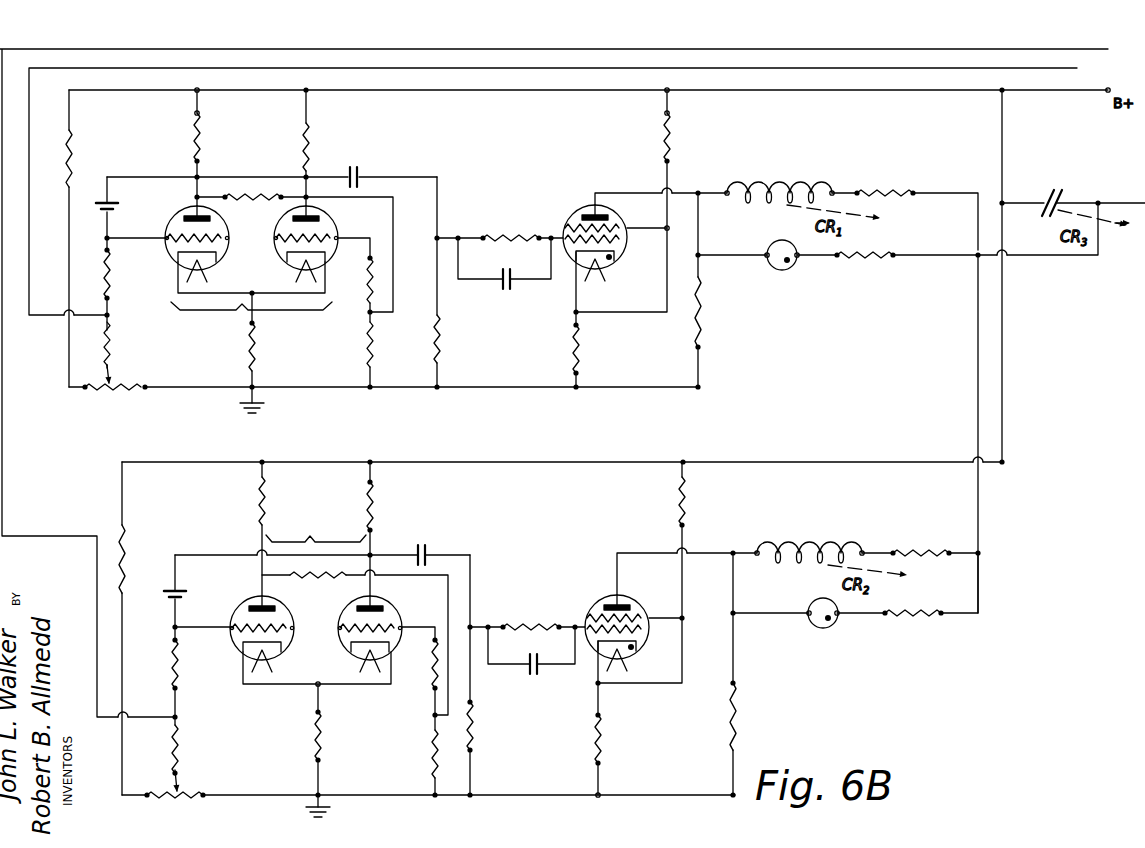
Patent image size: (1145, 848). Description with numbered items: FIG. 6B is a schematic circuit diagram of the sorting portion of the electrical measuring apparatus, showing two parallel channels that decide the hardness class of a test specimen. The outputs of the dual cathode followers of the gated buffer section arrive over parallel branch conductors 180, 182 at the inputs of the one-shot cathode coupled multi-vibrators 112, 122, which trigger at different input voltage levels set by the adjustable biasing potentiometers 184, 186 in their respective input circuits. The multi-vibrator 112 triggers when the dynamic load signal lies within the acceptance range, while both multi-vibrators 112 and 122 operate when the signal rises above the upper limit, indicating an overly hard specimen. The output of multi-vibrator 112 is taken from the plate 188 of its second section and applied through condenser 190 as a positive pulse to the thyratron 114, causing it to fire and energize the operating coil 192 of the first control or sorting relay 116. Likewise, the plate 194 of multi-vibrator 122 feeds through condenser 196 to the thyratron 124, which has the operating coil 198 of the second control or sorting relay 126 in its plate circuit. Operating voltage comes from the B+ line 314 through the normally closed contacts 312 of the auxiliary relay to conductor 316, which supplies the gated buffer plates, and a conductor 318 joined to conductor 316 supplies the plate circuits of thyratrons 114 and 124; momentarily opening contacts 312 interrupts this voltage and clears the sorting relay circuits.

The multi-vibrator 112 is at (238, 312).
The thyratron section 114 is at (582, 212).
The control or sorting relay 116 is at (780, 183).
The multi-vibrator 122 is at (313, 530).
The thyratron section 124 is at (585, 604).
The control or sorting relay 126 is at (793, 545).
The branch conductor 180 is at (1077, 68).
The branch conductor 182 is at (1062, 49).
The adjustable biasing potentiometer 184 is at (112, 380).
The adjustable biasing potentiometer 186 is at (182, 790).
The plate 188 is at (321, 213).
The condenser 190 is at (359, 175).
The operating coil 192 is at (832, 190).
The plate 194 is at (384, 600).
The condenser 196 is at (427, 552).
The operating coil 198 is at (830, 552).
The normally closed contacts 312 is at (1043, 212).
The B+ line 314 is at (1018, 92).
The conductor 316 is at (1102, 200).
The conductor 318 is at (1100, 258).